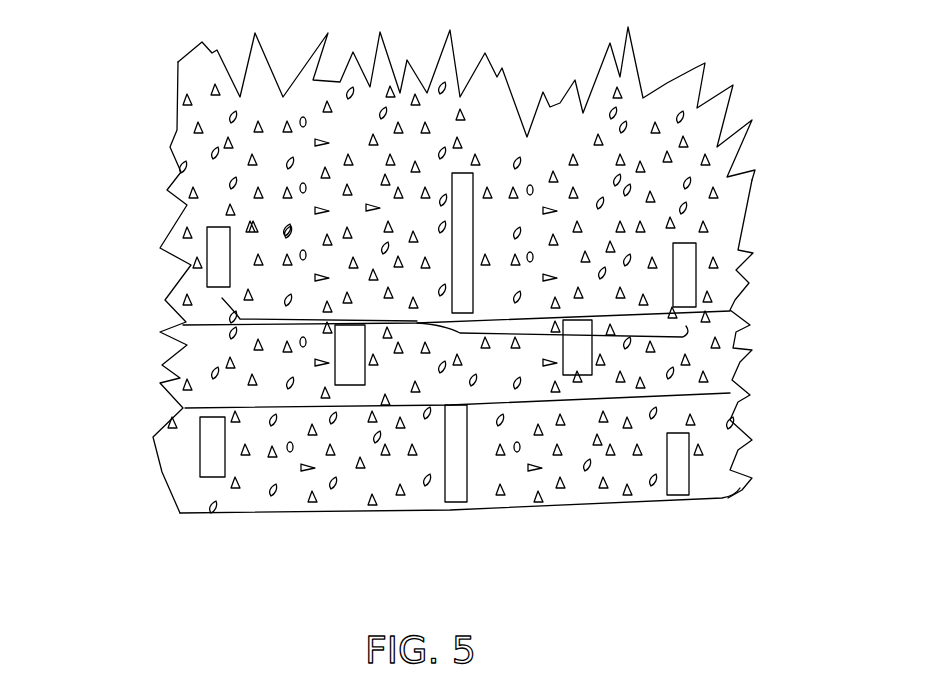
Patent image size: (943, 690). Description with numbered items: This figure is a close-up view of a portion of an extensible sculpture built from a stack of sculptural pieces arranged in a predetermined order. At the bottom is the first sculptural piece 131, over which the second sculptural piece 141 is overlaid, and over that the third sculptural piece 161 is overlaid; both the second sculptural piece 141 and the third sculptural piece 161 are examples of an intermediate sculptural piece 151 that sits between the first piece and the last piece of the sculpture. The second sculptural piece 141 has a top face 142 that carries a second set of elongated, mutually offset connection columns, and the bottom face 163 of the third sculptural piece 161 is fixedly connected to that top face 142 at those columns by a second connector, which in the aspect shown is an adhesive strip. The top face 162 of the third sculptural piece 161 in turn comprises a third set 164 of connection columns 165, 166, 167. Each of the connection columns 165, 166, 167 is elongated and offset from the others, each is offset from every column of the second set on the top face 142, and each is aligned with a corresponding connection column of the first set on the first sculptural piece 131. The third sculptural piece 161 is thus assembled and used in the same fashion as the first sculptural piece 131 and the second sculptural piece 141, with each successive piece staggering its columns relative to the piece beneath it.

The first sculptural piece 131 is at (220, 487).
The second sculptural piece 141 is at (725, 380).
The top face of the second sculptural piece 142 is at (723, 338).
The intermediate sculptural piece 151 is at (732, 287).
The third sculptural piece 161 is at (677, 88).
The top face of the third sculptural piece 162 is at (368, 140).
The bottom face of the third sculptural piece 163 is at (208, 329).
The third set of connection columns 164 is at (460, 335).
The connection column 165 is at (223, 242).
The connection column 166 is at (463, 193).
The connection column 167 is at (680, 267).